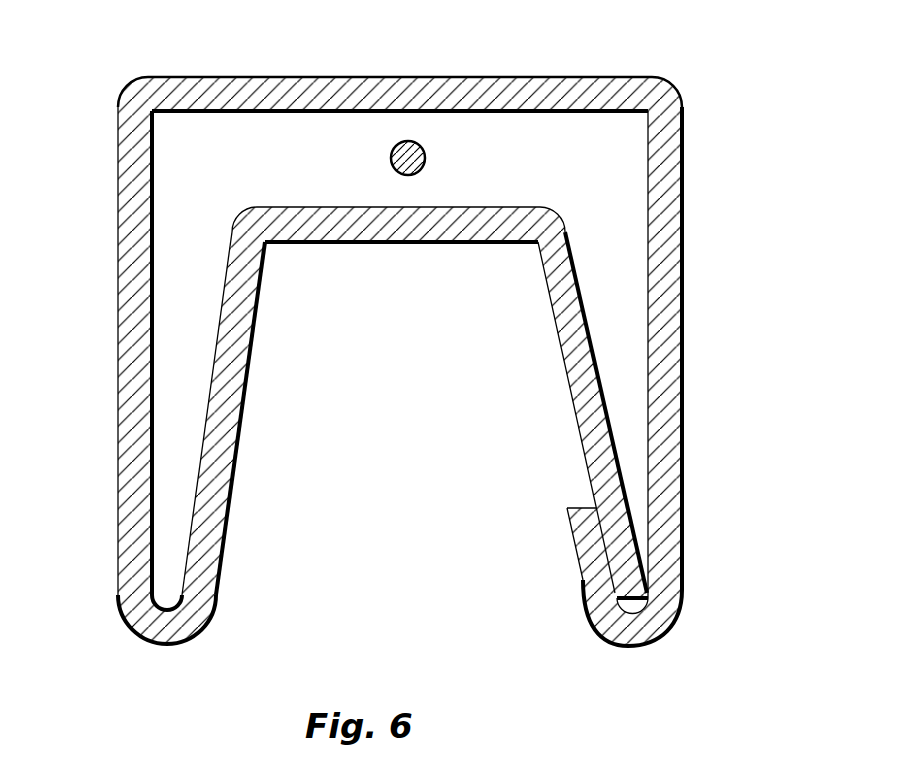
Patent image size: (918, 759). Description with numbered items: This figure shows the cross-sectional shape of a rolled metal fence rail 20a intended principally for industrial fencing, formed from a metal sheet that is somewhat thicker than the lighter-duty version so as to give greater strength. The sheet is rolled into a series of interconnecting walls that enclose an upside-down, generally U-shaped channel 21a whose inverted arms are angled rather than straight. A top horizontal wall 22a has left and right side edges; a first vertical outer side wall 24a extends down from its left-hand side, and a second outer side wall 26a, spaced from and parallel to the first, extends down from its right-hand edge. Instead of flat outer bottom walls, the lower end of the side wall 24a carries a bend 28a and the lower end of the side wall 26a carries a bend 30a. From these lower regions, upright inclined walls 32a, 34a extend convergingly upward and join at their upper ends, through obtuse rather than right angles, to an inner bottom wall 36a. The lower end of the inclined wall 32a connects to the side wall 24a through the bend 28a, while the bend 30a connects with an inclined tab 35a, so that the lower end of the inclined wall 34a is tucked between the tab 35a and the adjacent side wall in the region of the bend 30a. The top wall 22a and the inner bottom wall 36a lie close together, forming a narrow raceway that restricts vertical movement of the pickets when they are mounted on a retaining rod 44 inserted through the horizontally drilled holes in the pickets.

The rail 20a is at (550, 62).
The U-shaped channel 21a is at (229, 148).
The top horizontal wall 22a is at (412, 77).
The first outer side wall 24a is at (125, 320).
The second outer side wall 26a is at (668, 300).
The bend 28a is at (167, 632).
The bend 30a is at (640, 640).
The inclined wall 32a is at (228, 407).
The inclined wall 34a is at (567, 370).
The inclined tab 35a is at (590, 547).
The inner bottom wall 36a is at (388, 233).
The retaining rod 44 is at (392, 160).